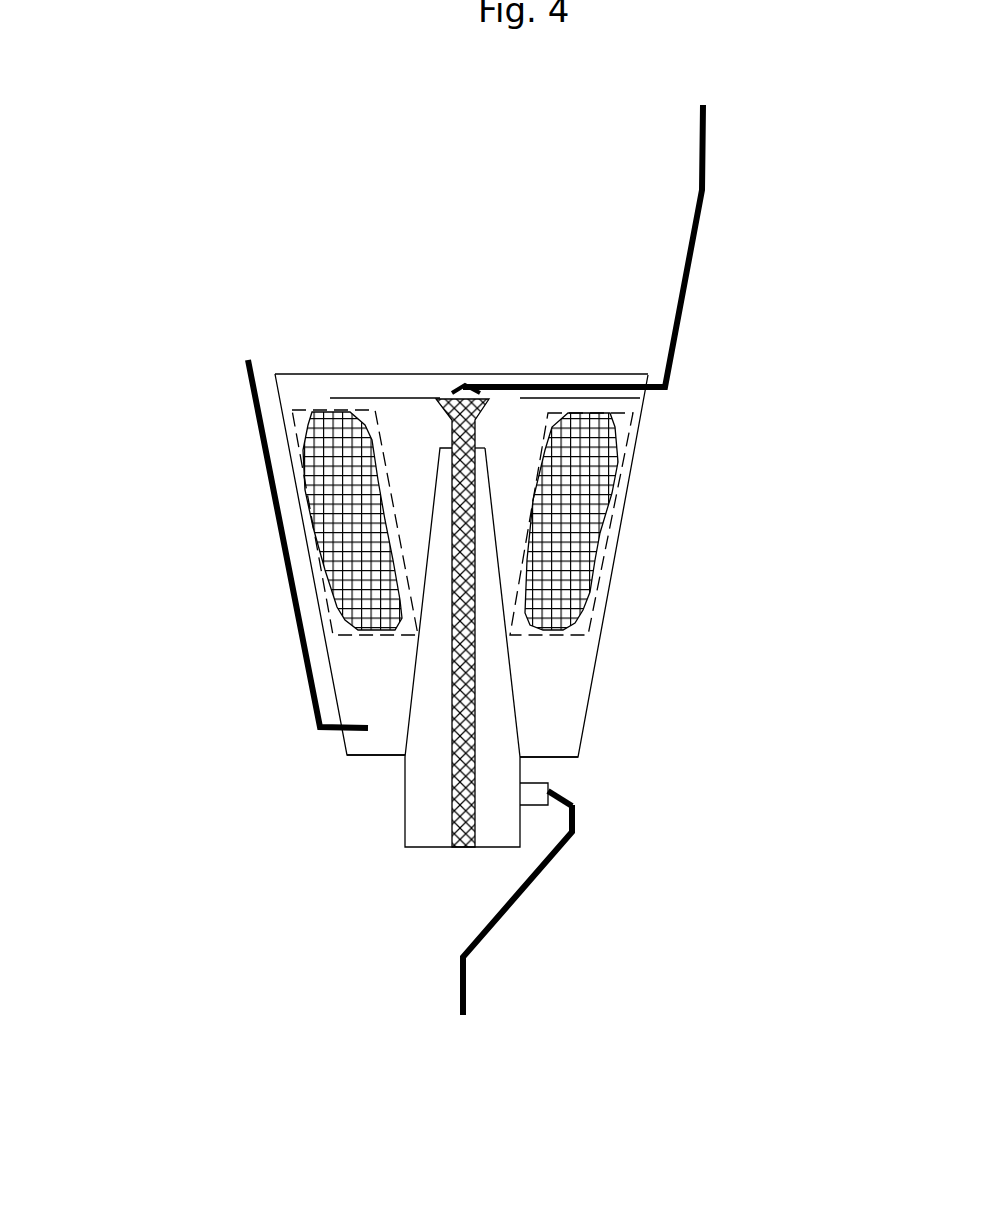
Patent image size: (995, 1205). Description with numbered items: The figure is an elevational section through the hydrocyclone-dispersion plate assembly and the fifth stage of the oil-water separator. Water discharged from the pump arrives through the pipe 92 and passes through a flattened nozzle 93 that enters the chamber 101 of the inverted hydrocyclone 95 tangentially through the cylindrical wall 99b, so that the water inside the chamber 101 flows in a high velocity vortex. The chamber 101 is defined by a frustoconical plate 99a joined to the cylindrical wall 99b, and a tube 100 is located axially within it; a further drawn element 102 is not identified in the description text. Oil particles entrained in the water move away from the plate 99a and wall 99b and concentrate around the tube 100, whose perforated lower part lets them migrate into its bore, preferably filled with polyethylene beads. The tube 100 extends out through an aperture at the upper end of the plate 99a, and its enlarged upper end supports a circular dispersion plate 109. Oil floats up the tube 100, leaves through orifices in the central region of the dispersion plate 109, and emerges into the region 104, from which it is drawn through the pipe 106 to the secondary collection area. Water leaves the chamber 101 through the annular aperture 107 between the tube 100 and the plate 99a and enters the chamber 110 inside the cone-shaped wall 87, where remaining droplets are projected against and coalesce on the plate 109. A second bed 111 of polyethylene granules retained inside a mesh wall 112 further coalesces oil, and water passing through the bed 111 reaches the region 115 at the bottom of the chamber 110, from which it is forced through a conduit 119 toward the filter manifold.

The cone-shaped wall 87 is at (607, 623).
The pipe 92 is at (574, 834).
The flattened nozzle 93 is at (552, 788).
The inverted hydrocyclone 95 is at (488, 847).
The frustoconical plate 99a is at (510, 668).
The cylindrical wall 99b is at (550, 783).
The tube 100 is at (475, 698).
The chamber 101 is at (423, 812).
The base shoulder 102 is at (452, 778).
The region 104 is at (640, 397).
The pipe 106 is at (463, 384).
The annular aperture 107 is at (485, 447).
The dispersion plate 109 is at (440, 398).
The chamber 110 is at (510, 482).
The second bed 111 is at (347, 567).
The mesh wall 112 is at (305, 487).
The region 115 is at (367, 680).
The conduit 119 is at (278, 521).